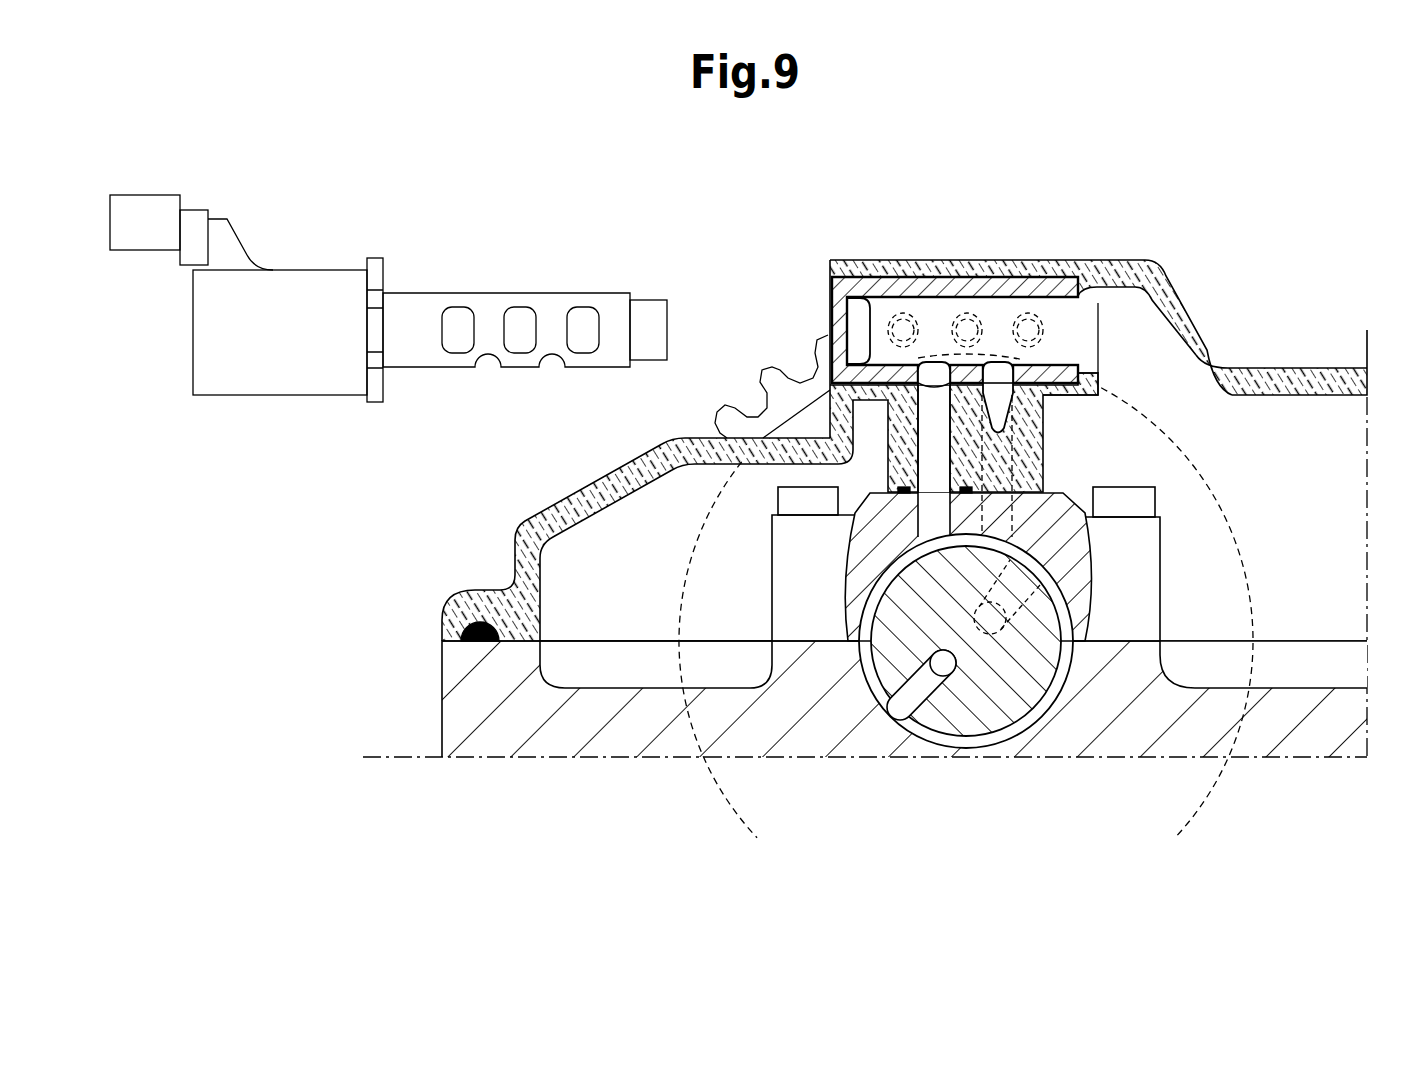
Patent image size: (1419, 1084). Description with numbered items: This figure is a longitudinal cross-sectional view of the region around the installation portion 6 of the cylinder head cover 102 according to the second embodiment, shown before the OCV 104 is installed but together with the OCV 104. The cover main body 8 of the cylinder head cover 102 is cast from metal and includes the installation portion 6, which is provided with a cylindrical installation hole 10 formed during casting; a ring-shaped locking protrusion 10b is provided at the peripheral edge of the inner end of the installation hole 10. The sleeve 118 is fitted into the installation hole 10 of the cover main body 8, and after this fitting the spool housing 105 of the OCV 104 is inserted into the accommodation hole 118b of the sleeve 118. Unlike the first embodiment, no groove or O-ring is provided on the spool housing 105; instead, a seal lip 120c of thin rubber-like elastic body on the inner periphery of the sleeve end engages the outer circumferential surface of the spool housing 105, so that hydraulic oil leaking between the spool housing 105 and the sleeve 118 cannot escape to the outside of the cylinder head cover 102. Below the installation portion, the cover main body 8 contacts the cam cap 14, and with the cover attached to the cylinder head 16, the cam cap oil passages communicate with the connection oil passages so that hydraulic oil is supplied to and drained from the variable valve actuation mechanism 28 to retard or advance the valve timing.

The OCV 104 is at (342, 242).
The spool housing 105 is at (618, 303).
The cylinder head cover 102 is at (1310, 245).
The installation portion 6 is at (920, 261).
The cover main body 8 is at (1279, 370).
The installation hole 10 is at (1037, 302).
The locking protrusion 10b is at (1090, 366).
The sleeve 118 is at (1062, 290).
The accommodation hole 118b is at (994, 305).
The seal lip 120c is at (865, 315).
The cam cap 14 is at (1162, 571).
The cylinder head 16 is at (1330, 688).
The variable valve actuation mechanism 28 is at (1219, 498).